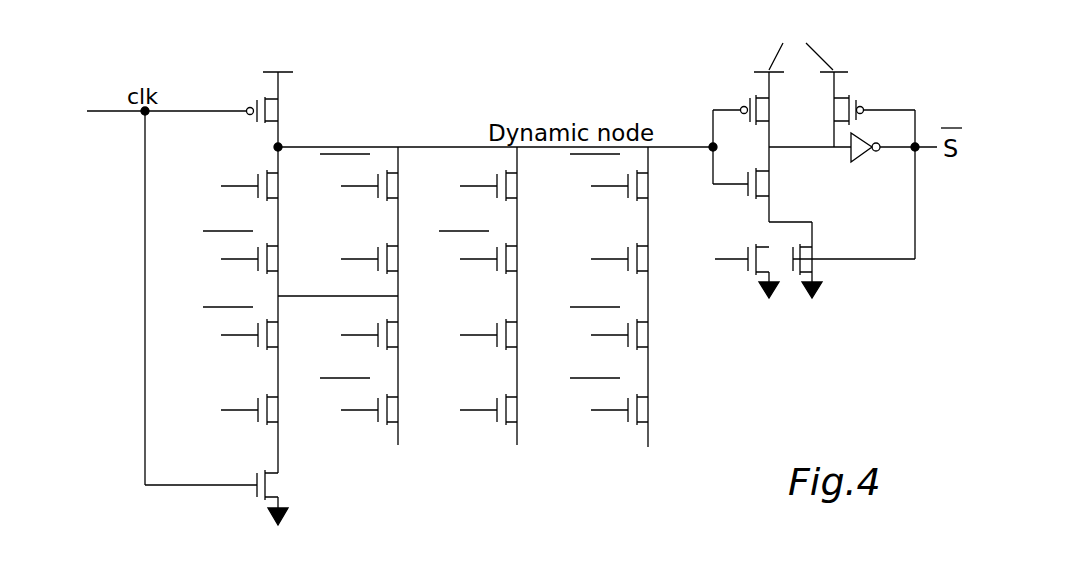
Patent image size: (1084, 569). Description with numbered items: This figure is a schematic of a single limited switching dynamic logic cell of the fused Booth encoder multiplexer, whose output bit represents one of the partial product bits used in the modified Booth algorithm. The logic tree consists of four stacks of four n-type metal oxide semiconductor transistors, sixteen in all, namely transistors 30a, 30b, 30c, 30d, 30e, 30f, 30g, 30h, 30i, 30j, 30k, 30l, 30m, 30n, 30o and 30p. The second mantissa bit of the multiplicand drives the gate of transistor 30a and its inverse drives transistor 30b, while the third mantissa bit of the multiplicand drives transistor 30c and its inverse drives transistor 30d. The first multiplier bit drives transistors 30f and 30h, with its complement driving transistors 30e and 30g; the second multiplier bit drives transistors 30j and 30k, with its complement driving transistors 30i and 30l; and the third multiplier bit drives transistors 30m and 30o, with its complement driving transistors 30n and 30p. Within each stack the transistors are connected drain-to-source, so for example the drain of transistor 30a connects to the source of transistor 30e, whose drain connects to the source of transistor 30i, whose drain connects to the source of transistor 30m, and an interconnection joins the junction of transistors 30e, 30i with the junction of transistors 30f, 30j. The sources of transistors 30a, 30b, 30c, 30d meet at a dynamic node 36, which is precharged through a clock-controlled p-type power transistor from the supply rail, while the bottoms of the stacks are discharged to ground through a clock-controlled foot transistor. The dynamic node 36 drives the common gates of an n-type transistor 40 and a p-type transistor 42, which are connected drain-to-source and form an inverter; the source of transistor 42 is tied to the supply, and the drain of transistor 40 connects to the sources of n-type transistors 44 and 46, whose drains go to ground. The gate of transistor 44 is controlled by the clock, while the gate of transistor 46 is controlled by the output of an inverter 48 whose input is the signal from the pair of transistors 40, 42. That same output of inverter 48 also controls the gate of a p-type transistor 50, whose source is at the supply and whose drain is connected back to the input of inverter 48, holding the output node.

The transistor 30a is at (265, 196).
The transistor 30b is at (387, 170).
The transistor 30c is at (506, 171).
The transistor 30d is at (640, 172).
The transistor 30e is at (265, 272).
The transistor 30f is at (387, 272).
The transistor 30g is at (506, 272).
The transistor 30h is at (637, 243).
The transistor 30i is at (265, 347).
The transistor 30j is at (387, 347).
The transistor 30k is at (506, 347).
The transistor 30l is at (637, 347).
The transistor 30m is at (265, 422).
The transistor 30n is at (387, 422).
The transistor 30o is at (506, 422).
The transistor 30p is at (637, 423).
The dynamic node 36 is at (713, 147).
The N-MOS transistor 40 is at (753, 198).
The P-MOS transistor 42 is at (757, 98).
The N-MOS transistor 44 is at (756, 275).
The N-MOS transistor 46 is at (800, 273).
The inverter 48 is at (872, 156).
The P-MOS transistor 50 is at (849, 97).